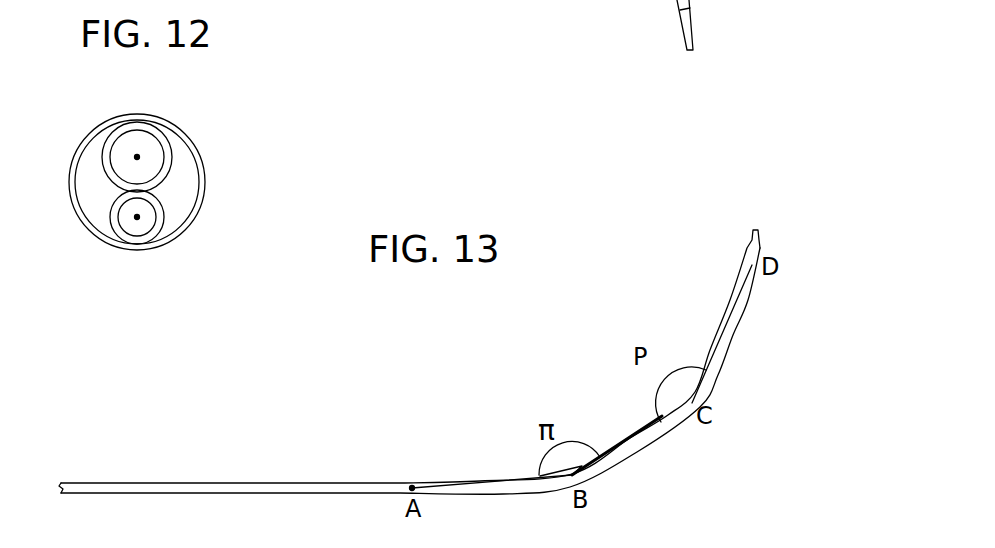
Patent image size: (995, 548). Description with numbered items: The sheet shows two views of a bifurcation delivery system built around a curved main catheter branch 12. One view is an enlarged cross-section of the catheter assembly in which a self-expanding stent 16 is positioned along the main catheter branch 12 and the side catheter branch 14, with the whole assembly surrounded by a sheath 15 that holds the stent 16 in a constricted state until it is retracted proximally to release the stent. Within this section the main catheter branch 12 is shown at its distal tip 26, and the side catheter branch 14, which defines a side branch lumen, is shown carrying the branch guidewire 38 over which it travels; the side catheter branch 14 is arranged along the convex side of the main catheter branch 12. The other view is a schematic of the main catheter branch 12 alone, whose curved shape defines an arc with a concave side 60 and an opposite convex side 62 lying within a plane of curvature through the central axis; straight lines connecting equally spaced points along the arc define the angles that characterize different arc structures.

In FIG. 12, the main catheter branch 12 is at (112, 131).
In FIG. 13, the main catheter branch 12 is at (283, 462).
In FIG. 12, the side catheter branch 14 is at (114, 228).
In FIG. 12, the sheath 15 is at (199, 153).
In FIG. 12, the stent 16 is at (77, 207).
In FIG. 12, the distal tip 26 is at (139, 155).
In FIG. 12, the guidewire 38 is at (139, 220).
In FIG. 13, the guidewire 38 is at (692, 25).
In FIG. 13, the concave side 60 is at (745, 273).
In FIG. 13, the convex side 62 is at (710, 388).